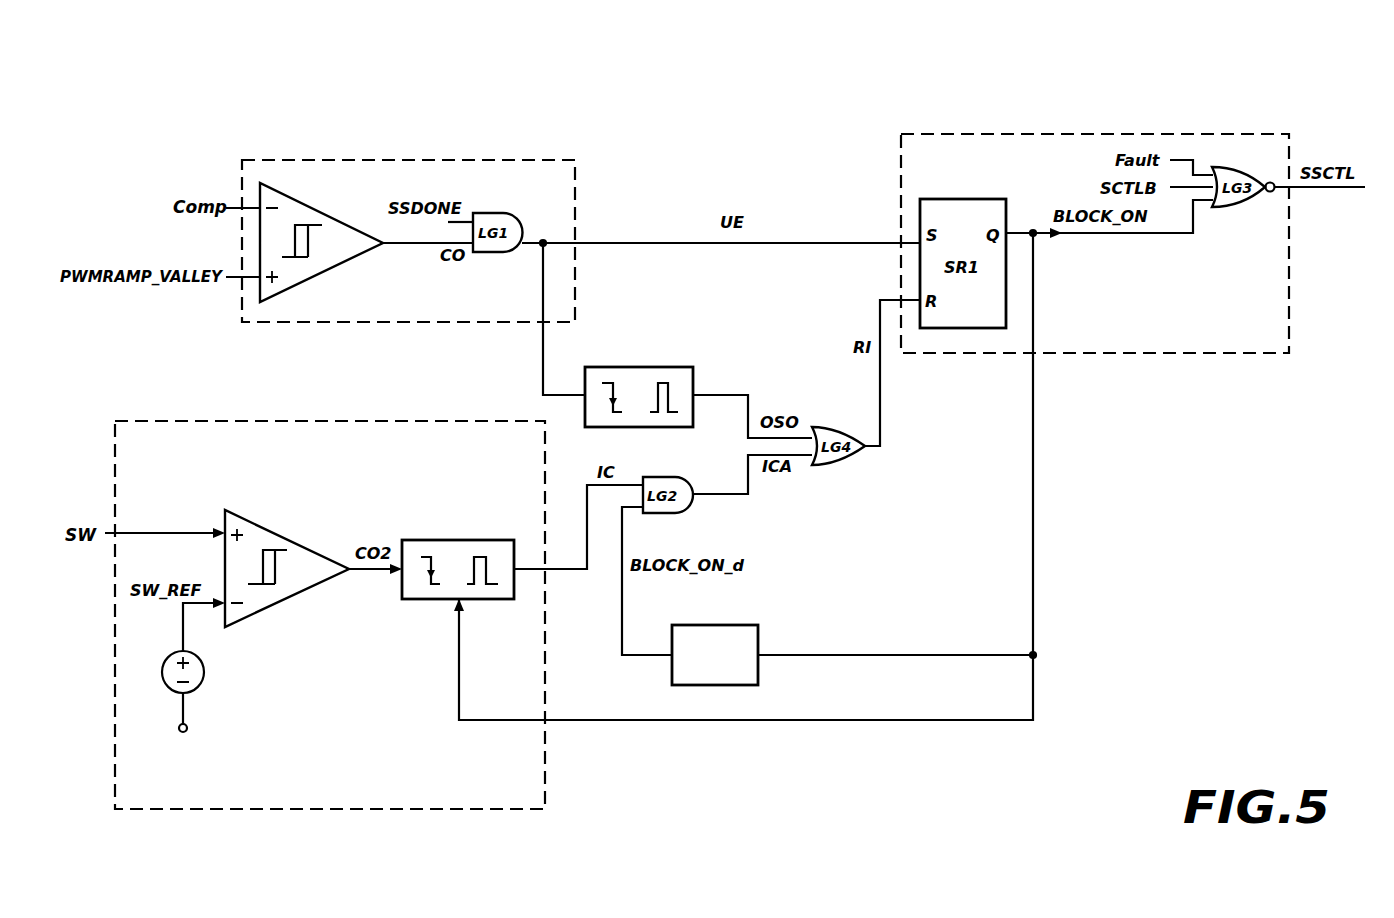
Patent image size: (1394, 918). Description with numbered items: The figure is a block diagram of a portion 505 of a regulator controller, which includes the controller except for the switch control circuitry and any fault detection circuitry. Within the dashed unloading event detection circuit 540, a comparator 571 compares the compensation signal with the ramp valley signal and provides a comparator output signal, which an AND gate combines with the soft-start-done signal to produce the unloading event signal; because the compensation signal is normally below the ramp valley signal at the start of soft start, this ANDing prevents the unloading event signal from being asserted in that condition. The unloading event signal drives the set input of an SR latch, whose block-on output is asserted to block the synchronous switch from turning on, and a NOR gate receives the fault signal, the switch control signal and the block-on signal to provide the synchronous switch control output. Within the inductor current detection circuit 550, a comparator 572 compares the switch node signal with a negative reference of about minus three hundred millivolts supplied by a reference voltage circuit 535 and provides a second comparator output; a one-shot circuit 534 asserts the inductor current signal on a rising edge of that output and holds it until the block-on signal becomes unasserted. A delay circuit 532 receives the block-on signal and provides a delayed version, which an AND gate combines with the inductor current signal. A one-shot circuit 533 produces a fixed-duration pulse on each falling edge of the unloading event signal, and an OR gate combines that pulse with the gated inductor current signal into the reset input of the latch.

The portion of regulator controller 505 is at (1272, 71).
The unloading event detection circuit 540 is at (293, 160).
The comparator 571 is at (304, 206).
The delay circuit 532 is at (959, 134).
The one-shot circuit 533 is at (641, 367).
The one-shot circuit 534 is at (459, 540).
The reference voltage circuit 535 is at (200, 689).
The inductor current detection circuit 550 is at (166, 421).
The comparator 572 is at (288, 539).